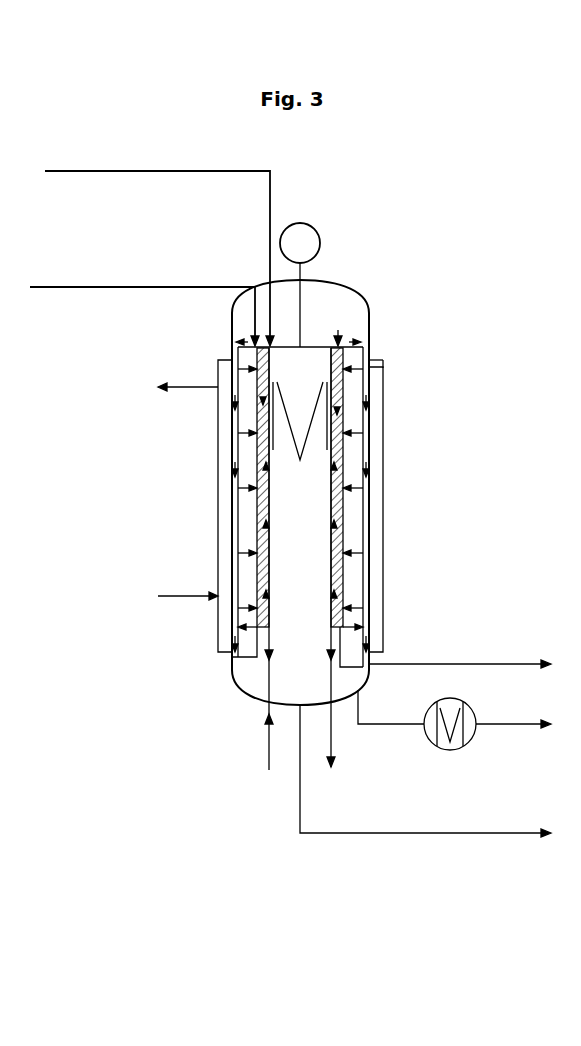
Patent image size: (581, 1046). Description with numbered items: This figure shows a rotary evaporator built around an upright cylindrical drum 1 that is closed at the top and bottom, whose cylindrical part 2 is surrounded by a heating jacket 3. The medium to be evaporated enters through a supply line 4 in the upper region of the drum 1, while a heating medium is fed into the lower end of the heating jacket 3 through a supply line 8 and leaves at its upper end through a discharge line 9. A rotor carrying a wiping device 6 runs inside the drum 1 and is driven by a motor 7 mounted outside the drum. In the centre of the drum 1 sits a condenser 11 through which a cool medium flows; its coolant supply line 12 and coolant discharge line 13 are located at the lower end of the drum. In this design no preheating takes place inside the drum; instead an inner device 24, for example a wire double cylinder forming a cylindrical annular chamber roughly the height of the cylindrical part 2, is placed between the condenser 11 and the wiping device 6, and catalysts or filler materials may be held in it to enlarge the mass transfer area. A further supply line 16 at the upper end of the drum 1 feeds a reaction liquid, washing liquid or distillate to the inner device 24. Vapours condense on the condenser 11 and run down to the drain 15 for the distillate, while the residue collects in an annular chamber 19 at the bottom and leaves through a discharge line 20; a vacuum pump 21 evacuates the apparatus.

The drum 1 is at (343, 283).
The cylindrical part 2 is at (370, 330).
The heating jacket 3 is at (377, 453).
The supply line 4 is at (240, 285).
The wiping device 6 is at (372, 360).
The motor 7 is at (315, 228).
The supply line 8 is at (165, 600).
The discharge line 9 is at (178, 390).
The condenser 11 is at (273, 503).
The supply line 12 is at (268, 753).
The discharge line 13 is at (327, 752).
The drain 15 is at (482, 815).
The further supply line 16 is at (172, 171).
The annular chamber 19 is at (243, 657).
The discharge line 20 is at (440, 664).
The vacuum pump 21 is at (487, 698).
The inner device 24 is at (257, 510).